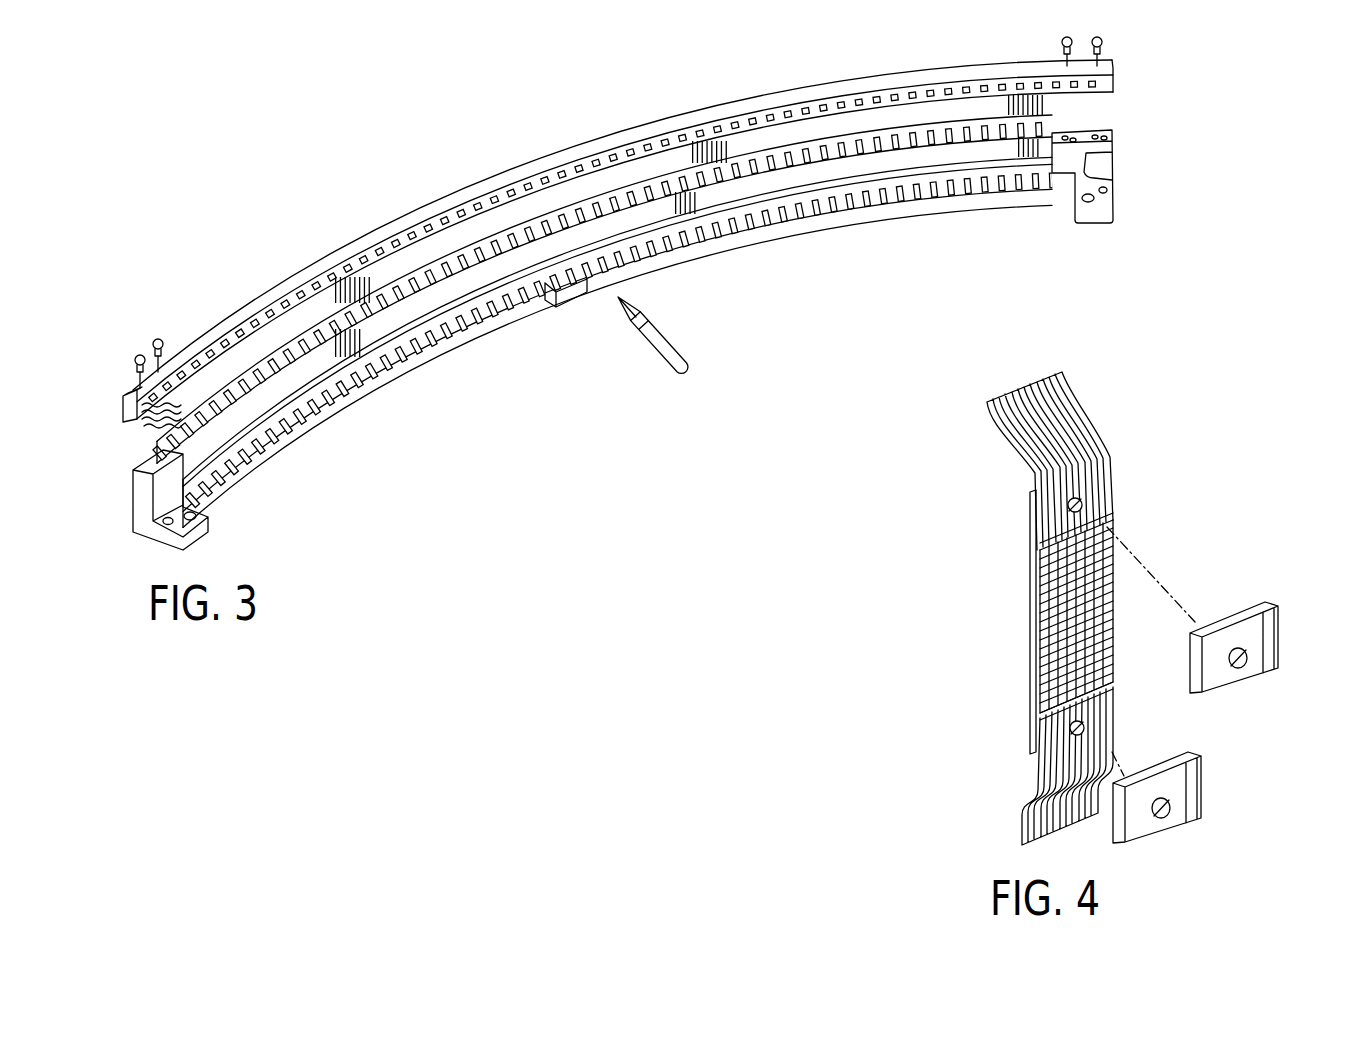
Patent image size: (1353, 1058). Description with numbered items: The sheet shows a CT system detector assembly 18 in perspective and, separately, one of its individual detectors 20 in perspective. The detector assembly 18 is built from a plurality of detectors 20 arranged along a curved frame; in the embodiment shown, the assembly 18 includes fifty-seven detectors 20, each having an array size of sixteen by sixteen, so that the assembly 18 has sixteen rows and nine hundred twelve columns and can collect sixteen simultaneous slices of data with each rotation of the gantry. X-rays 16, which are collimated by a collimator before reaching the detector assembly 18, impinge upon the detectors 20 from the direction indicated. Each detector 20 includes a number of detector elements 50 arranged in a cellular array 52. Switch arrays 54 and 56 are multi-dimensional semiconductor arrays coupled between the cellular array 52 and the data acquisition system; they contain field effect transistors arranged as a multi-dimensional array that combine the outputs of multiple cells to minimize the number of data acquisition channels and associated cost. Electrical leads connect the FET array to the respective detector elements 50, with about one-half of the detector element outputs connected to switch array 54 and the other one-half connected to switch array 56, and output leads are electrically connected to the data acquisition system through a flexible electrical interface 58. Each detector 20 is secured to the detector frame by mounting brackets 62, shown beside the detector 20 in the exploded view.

In FIG. 3, the x-rays 16 is at (653, 349).
In FIG. 3, the detector assembly 18 is at (493, 164).
In FIG. 3, the detector 20 is at (335, 283).
In FIG. 4, the detector 20 is at (1208, 437).
In FIG. 4, the detector elements 50 is at (1040, 580).
In FIG. 4, the cellular array 52 is at (1040, 658).
In FIG. 4, the switch array 54 is at (1040, 549).
In FIG. 4, the switch array 56 is at (1107, 688).
In FIG. 4, the flexible electrical interface 58 is at (1103, 442).
In FIG. 4, the mounting brackets 62 is at (1253, 623).